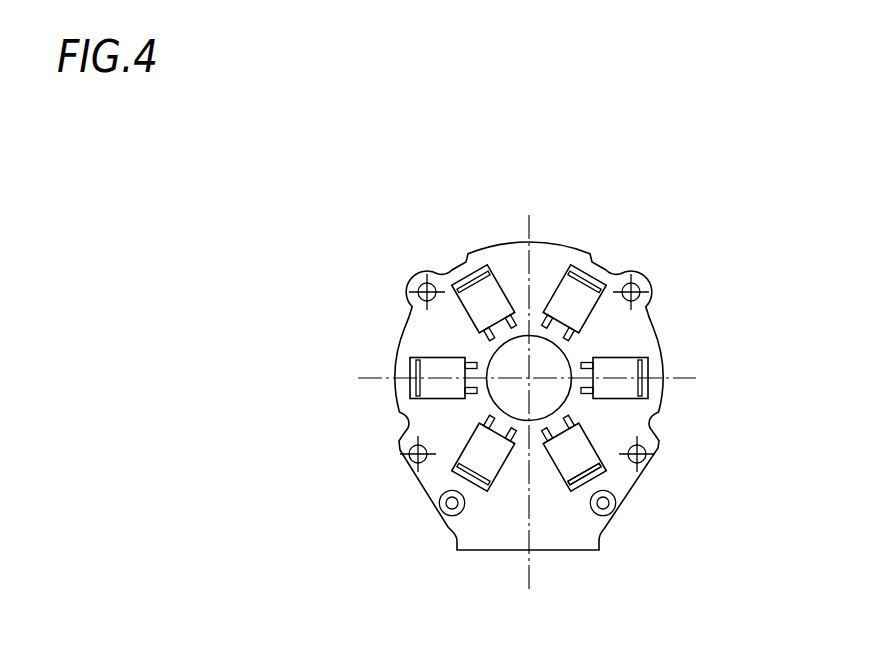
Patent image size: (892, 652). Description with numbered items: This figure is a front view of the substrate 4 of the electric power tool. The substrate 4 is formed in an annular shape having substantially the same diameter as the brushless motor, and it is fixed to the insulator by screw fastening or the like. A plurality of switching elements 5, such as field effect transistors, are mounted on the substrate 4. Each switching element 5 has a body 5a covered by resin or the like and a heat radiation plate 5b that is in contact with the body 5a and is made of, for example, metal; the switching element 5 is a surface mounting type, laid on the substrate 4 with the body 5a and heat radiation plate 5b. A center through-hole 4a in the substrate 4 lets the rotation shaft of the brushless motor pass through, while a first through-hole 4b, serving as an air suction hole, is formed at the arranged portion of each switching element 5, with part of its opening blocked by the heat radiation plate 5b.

The substrate 4 is at (583, 252).
The center through-hole 4a is at (522, 348).
The first through-hole 4b is at (469, 283).
The switching element 5 is at (579, 521).
The body 5a is at (572, 462).
The heat radiation plate 5b is at (580, 473).